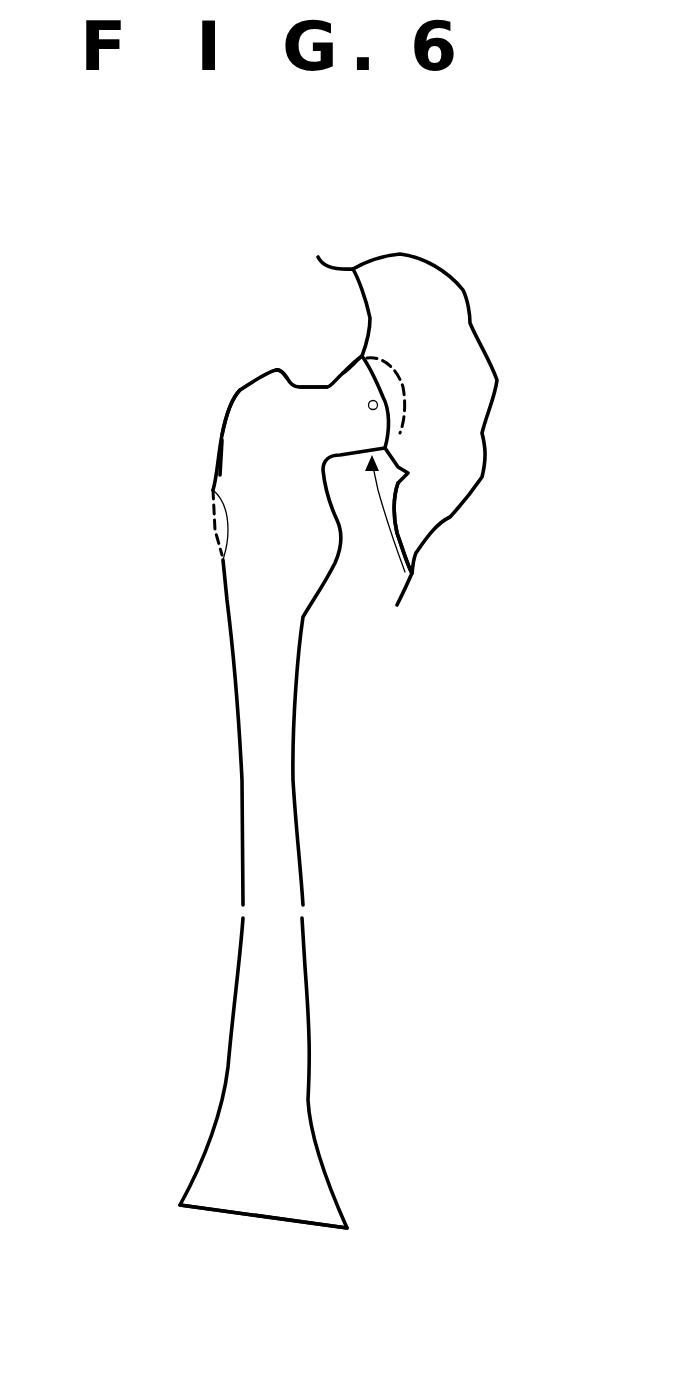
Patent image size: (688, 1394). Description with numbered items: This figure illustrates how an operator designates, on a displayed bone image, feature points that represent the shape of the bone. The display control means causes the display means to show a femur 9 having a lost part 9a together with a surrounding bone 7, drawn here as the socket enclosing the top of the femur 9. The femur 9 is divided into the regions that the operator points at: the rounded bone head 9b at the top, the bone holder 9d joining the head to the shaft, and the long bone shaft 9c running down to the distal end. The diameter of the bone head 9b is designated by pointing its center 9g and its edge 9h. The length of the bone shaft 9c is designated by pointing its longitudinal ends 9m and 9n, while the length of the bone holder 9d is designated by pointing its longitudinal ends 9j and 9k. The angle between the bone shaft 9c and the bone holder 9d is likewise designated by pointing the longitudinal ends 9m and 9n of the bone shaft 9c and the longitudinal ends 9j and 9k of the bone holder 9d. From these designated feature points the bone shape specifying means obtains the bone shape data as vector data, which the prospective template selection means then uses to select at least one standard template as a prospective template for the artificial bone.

The bone 7 is at (450, 317).
The femur 9 is at (277, 723).
The lost part 9a is at (220, 533).
The bone head 9b is at (352, 366).
The bone shaft 9c is at (240, 463).
The bone holder 9d is at (340, 440).
The center of the bone head 9g is at (376, 409).
The edge of the bone head 9h is at (415, 550).
The longitudinal end of the bone holder 9j is at (305, 365).
The longitudinal end of the bone holder 9k is at (313, 438).
The longitudinal end of the bone shaft 9m is at (297, 449).
The longitudinal end of the bone shaft 9n is at (240, 1220).